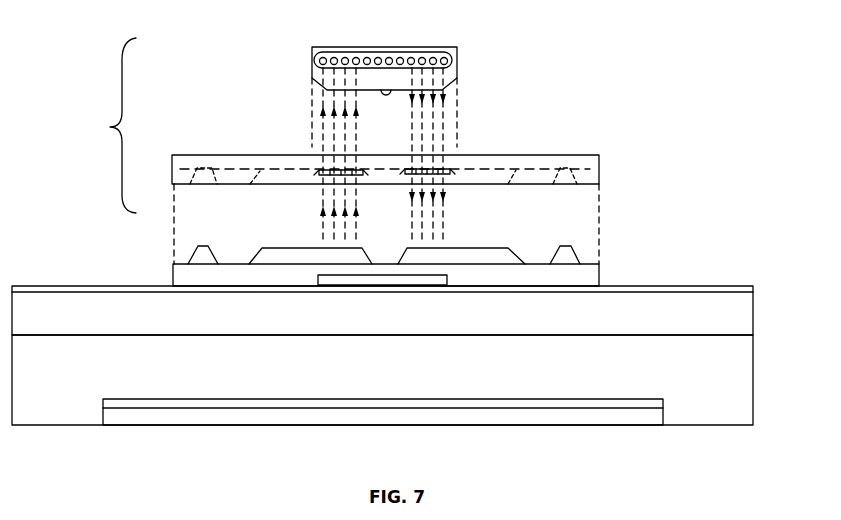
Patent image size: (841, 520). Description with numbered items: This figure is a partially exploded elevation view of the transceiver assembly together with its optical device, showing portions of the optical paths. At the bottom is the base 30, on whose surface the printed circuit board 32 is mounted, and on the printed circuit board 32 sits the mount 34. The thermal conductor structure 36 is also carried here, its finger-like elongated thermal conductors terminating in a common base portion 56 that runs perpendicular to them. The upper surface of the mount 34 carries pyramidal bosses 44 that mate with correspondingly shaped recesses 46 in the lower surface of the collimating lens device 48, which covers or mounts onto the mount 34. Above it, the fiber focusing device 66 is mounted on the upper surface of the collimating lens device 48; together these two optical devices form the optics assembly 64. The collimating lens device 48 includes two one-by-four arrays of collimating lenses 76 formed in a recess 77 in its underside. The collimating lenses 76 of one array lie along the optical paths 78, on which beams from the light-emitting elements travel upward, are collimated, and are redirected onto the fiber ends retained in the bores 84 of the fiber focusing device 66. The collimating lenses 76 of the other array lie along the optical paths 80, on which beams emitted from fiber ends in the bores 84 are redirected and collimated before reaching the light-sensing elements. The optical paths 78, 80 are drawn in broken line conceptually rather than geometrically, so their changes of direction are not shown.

The base 30 is at (755, 360).
The printed circuit board 32 is at (754, 300).
The mount 34 is at (600, 264).
The thermal conductor structure 36 is at (380, 278).
The pyramidal bosses 44 is at (203, 247).
The recesses 46 is at (260, 172).
The collimating lens device 48 is at (599, 158).
The common base portion 56 is at (53, 286).
The optics assembly 64 is at (110, 127).
The fiber focusing device 66 is at (312, 50).
The collimating lenses 76 is at (319, 171).
The recess 77 is at (385, 173).
The optical paths 78 is at (323, 228).
The optical paths 80 is at (447, 225).
The bores 84 is at (332, 58).